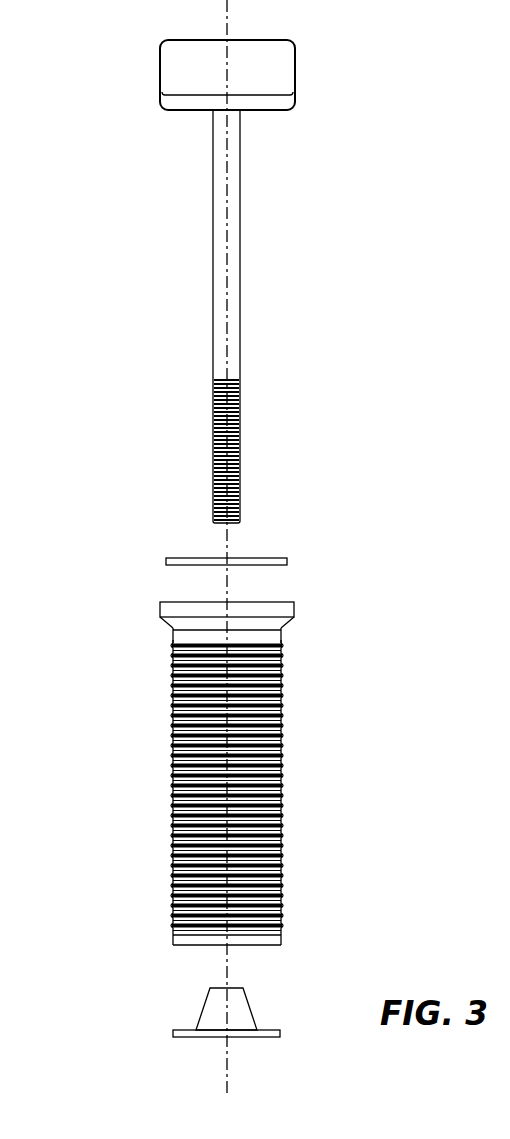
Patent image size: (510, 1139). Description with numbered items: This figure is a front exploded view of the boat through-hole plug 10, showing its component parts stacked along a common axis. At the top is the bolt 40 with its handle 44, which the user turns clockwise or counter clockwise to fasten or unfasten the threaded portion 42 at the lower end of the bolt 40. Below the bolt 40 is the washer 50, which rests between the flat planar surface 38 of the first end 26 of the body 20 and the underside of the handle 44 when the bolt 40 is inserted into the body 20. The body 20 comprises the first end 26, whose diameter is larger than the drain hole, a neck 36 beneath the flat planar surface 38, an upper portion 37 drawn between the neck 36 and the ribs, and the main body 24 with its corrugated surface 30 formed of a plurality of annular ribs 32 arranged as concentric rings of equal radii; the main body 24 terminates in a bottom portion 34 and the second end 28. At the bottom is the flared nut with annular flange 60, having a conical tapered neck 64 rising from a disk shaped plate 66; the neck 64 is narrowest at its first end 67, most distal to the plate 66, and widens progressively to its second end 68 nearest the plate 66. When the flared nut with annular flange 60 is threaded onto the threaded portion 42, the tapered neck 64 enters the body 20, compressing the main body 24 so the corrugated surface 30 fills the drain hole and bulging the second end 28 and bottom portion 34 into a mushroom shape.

The boat through-hole plug 10 is at (116, 275).
The body 20 is at (327, 714).
The main body 24 is at (263, 755).
The first end 26 is at (294, 607).
The second end 28 is at (270, 940).
The corrugated surface 30 is at (173, 697).
The annular ribs 32 is at (190, 835).
The bottom portion 34 is at (173, 932).
The neck 36 is at (173, 628).
The upper cylindrical portion 37 is at (272, 636).
The flat planar surface 38 is at (160, 603).
The bolt 40 is at (233, 230).
The threaded portion 42 is at (233, 437).
The handle 44 is at (296, 63).
The washer 50 is at (288, 561).
The flared nut with annular flange 60 is at (203, 1020).
The conical tapered neck 64 is at (251, 1008).
The disk shaped plate 66 is at (173, 1033).
The first end 67 is at (210, 988).
The second end 68 is at (250, 1037).